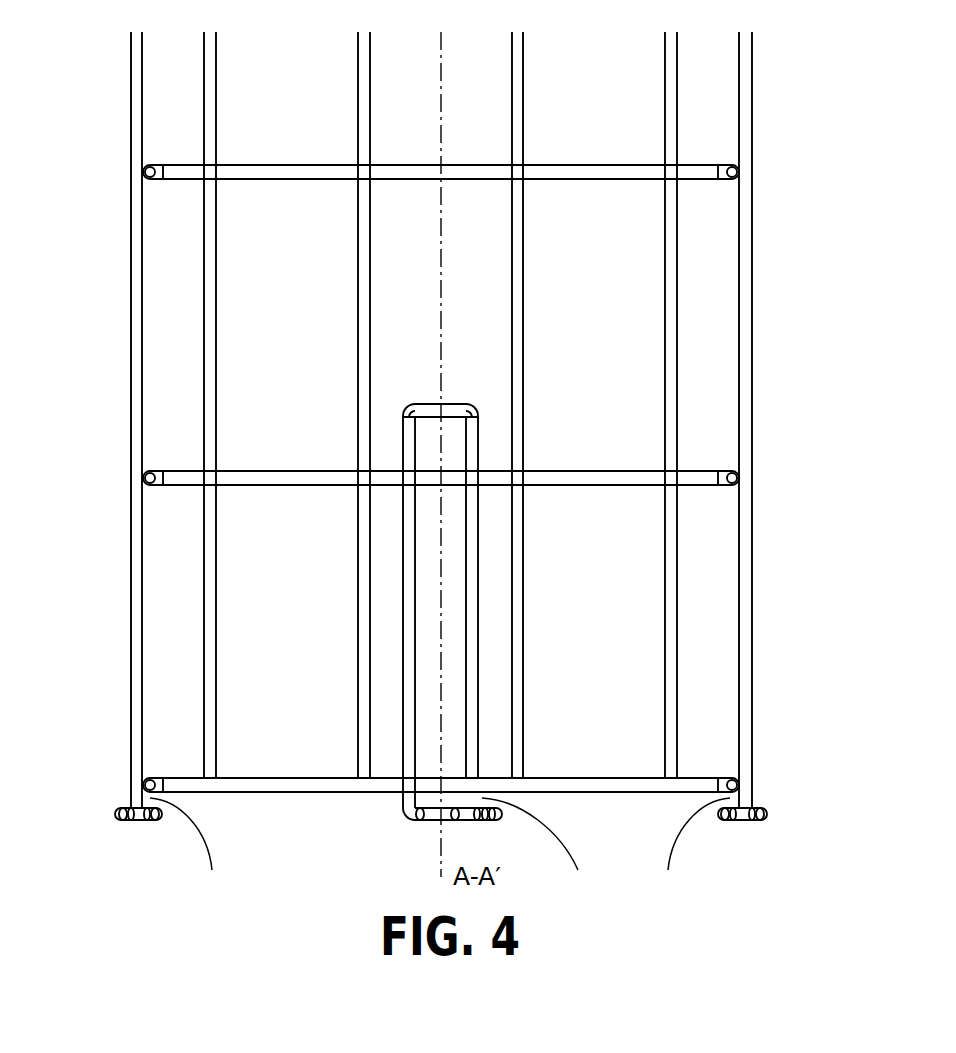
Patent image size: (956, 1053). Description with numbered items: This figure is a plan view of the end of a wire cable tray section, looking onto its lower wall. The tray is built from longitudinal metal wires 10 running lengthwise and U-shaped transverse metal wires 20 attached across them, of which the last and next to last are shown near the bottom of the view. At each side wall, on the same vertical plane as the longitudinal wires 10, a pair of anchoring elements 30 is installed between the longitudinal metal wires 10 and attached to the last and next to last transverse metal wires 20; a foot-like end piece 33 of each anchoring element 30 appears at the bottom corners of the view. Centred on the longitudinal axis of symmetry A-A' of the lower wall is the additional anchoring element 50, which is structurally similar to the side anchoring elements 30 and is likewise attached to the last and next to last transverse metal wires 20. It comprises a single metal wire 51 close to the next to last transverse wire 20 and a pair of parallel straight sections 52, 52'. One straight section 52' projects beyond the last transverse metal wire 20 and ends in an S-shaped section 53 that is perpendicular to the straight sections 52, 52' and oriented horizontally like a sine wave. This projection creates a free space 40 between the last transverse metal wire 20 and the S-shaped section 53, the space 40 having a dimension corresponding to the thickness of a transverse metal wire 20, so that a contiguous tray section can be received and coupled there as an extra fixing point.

The longitudinal metal wires 10 is at (357, 68).
The U-shaped transverse metal wires 20 is at (272, 170).
The anchoring elements 30 is at (450, 813).
The foot tube 33 is at (127, 822).
The free space 40 is at (440, 852).
The additional anchoring element 50 is at (456, 601).
The single metal wire 51 is at (430, 402).
The straight section 52 is at (542, 597).
The straight section 52' is at (345, 612).
The S-shaped section 53 is at (430, 812).